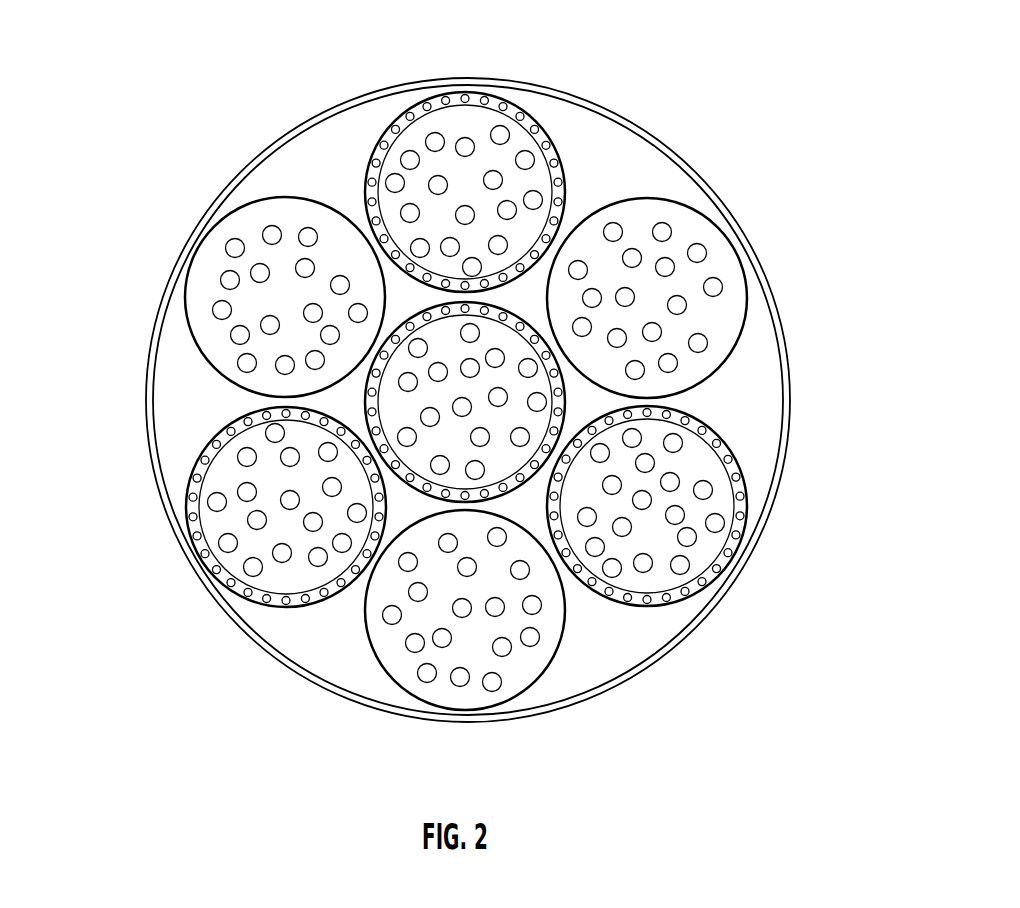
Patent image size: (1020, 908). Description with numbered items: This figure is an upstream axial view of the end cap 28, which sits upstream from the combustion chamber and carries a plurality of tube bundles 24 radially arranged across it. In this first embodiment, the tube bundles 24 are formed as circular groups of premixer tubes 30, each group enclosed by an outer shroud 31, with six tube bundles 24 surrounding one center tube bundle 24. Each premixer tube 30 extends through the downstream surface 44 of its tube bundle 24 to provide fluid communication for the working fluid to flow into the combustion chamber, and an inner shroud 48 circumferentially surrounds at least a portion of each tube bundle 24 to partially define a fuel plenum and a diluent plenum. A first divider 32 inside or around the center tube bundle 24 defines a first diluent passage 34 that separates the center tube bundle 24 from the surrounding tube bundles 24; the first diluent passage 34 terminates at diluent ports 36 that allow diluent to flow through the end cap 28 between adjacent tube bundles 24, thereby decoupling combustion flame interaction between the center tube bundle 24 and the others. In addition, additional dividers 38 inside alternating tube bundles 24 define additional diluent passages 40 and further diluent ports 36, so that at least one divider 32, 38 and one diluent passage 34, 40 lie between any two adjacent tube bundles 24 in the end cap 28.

The tube bundle 24 is at (527, 188).
The end cap 28 is at (777, 295).
The premixer tube 30 is at (245, 451).
The outer shroud 31 is at (473, 93).
The first divider 32 is at (386, 548).
The first diluent passage 34 is at (412, 490).
The diluent port 36 is at (538, 132).
The additional divider 38 is at (467, 354).
The additional diluent passage 40 is at (515, 115).
The downstream surface 44 is at (756, 297).
The inner shroud 48 is at (373, 153).